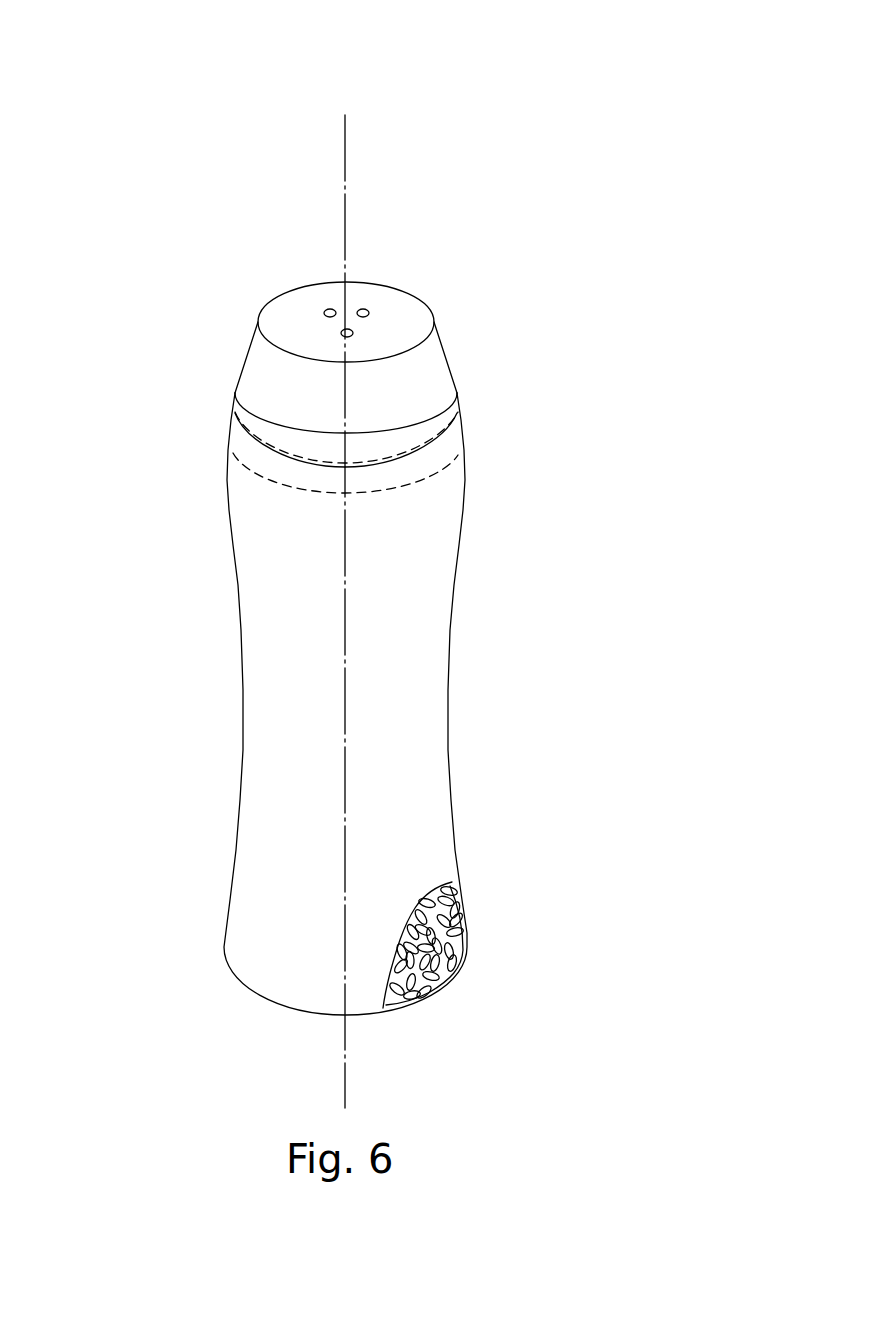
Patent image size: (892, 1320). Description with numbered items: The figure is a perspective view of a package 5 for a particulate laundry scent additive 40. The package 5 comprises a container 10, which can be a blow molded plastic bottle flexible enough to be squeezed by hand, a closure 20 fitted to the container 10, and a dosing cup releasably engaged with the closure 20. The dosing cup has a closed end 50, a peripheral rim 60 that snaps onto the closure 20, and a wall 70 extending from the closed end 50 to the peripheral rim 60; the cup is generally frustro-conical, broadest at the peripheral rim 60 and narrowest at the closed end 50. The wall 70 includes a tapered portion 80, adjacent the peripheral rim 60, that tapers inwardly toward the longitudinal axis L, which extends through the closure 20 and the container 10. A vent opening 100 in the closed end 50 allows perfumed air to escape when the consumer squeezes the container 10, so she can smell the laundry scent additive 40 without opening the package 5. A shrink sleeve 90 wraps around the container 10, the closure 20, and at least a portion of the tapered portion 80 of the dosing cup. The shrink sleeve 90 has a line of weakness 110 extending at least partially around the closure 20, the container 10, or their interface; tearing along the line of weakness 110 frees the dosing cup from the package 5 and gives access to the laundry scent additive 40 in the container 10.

The package 5 is at (510, 140).
The container 10 is at (453, 882).
The closure 20 is at (460, 468).
The laundry scent additive 40 is at (467, 943).
The closed end 50 is at (403, 310).
The peripheral rim 60 is at (462, 410).
The wall 70 is at (447, 355).
The tapered portion 80 is at (237, 410).
The shrink sleeve 90 is at (448, 652).
The vent opening 100 is at (362, 308).
The line of weakness 110 is at (252, 443).
The longitudinal axis L is at (347, 1090).